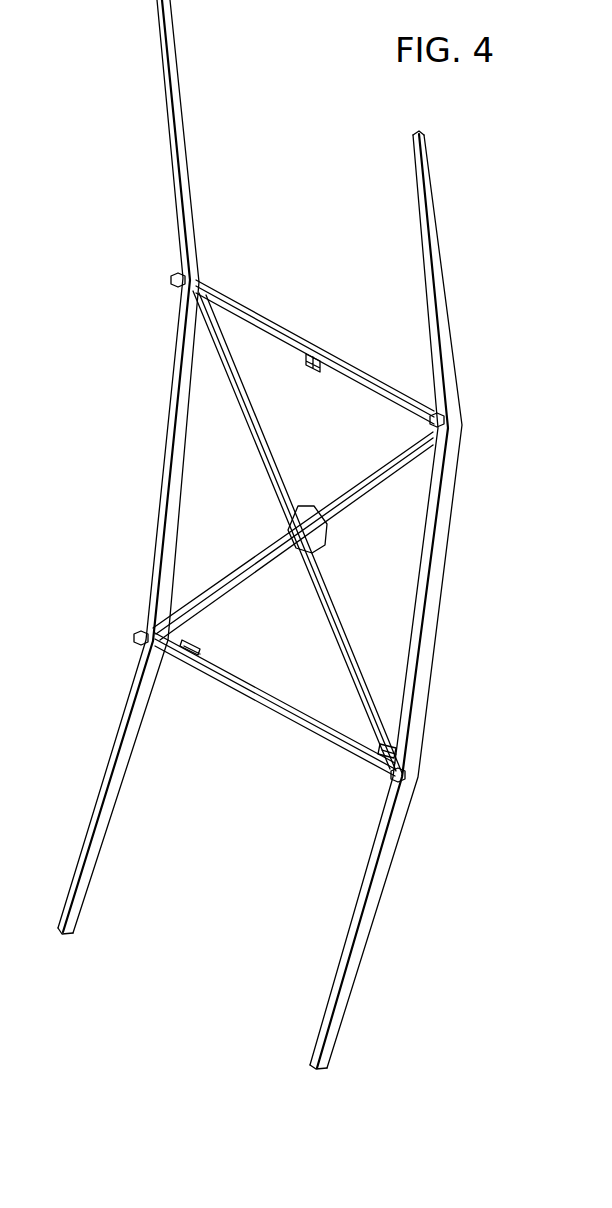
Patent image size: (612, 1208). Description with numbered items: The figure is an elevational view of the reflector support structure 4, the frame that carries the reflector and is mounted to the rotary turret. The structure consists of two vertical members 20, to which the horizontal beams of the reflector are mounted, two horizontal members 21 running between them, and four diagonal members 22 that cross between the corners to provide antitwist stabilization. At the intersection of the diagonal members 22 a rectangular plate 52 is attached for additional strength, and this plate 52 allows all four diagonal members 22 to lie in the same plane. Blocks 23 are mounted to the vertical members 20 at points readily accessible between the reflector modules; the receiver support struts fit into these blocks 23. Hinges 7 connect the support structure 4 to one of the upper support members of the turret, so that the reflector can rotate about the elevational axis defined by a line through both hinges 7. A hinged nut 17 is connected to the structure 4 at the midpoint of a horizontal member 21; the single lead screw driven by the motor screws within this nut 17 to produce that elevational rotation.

The reflector support structure 4 is at (190, 129).
The hinges 7 is at (203, 645).
The hinged nut 17 is at (305, 360).
The vertical members 20 is at (168, 84).
The horizontal members 21 is at (246, 300).
The diagonal members 22 is at (373, 494).
The blocks 23 is at (172, 276).
The rectangular plate 52 is at (307, 505).